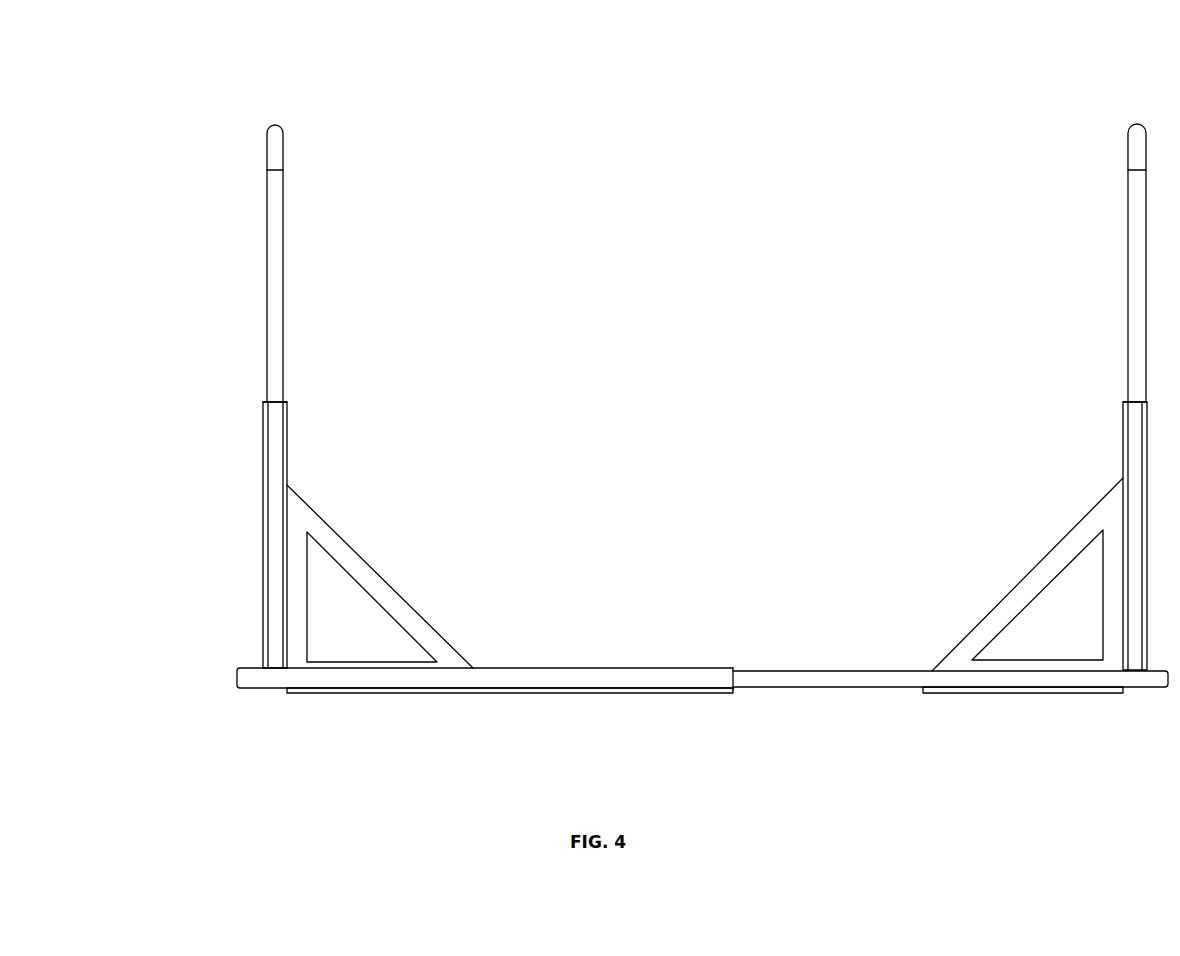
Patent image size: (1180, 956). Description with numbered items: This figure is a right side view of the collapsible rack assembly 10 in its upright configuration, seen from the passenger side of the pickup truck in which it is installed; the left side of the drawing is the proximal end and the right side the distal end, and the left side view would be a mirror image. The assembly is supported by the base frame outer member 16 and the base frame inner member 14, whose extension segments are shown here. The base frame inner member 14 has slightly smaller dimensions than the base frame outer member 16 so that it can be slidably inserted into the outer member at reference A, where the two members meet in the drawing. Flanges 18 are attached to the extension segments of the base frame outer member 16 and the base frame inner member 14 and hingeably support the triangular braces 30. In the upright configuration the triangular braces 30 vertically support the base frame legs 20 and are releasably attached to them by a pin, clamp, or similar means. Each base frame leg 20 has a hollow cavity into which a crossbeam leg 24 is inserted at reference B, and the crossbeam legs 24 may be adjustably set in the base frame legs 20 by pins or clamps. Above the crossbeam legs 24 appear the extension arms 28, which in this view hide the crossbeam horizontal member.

The collapsible rack assembly 10 is at (172, 107).
The base frame inner member 14 is at (860, 697).
The base frame outer member 16 is at (552, 695).
The flanges 18 is at (320, 697).
The base frame legs 20 is at (291, 462).
The crossbeam legs 24 is at (291, 262).
The extension arms 28 is at (266, 157).
The triangular braces 30 is at (414, 596).
The reference A is at (733, 695).
The reference B is at (294, 404).